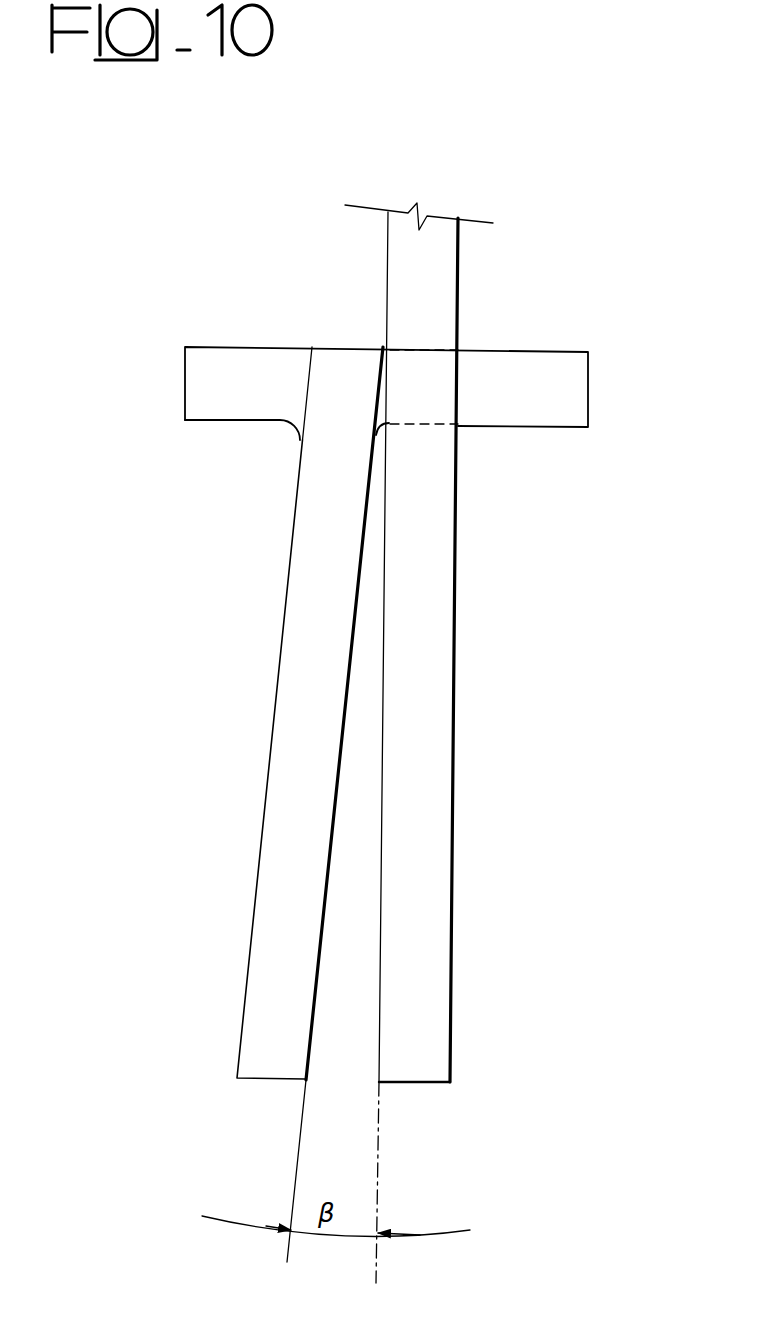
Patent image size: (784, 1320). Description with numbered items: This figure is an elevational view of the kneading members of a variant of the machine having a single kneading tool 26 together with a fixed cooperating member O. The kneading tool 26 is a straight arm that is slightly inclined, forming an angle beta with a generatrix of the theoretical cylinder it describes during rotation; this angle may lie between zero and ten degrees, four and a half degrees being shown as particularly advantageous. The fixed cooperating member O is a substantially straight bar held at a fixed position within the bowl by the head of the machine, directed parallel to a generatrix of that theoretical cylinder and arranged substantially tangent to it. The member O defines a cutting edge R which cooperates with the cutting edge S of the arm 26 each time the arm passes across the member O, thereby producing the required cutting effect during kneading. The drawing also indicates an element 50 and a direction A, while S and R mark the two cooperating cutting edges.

The kneading tool 26 is at (317, 530).
The flange 50 is at (573, 385).
The fixed cooperating member O is at (443, 562).
The cutting edge S is at (343, 705).
The cutting edge R is at (387, 718).
The direction arrow A is at (290, 896).